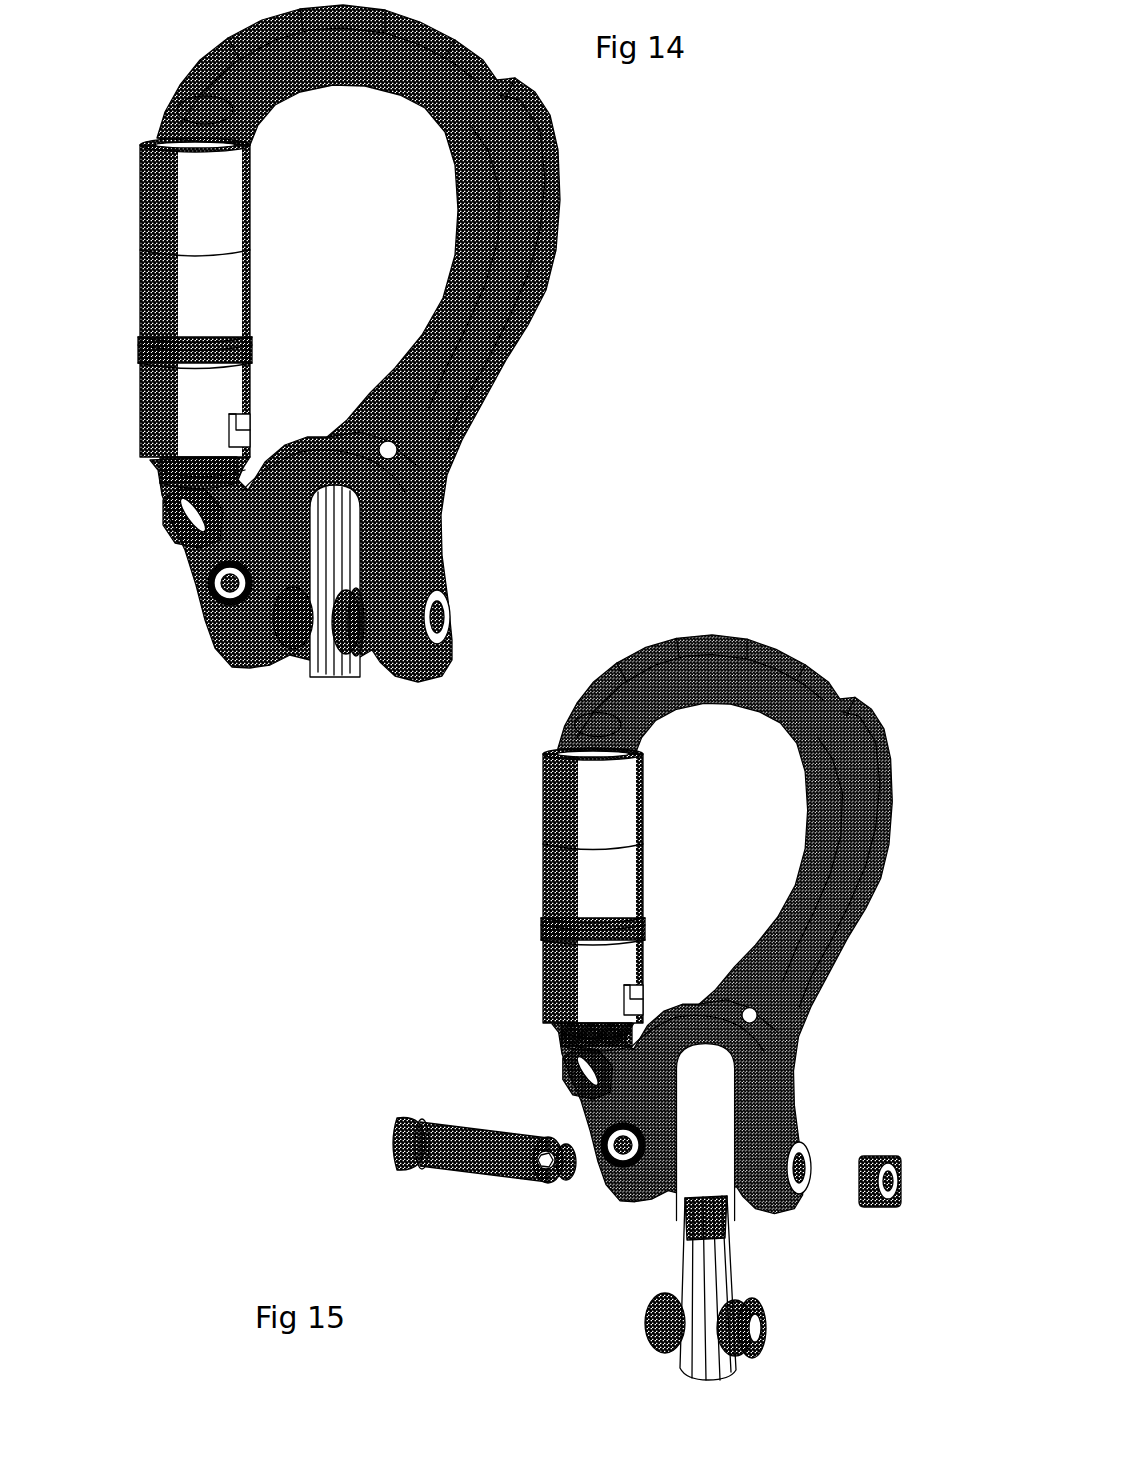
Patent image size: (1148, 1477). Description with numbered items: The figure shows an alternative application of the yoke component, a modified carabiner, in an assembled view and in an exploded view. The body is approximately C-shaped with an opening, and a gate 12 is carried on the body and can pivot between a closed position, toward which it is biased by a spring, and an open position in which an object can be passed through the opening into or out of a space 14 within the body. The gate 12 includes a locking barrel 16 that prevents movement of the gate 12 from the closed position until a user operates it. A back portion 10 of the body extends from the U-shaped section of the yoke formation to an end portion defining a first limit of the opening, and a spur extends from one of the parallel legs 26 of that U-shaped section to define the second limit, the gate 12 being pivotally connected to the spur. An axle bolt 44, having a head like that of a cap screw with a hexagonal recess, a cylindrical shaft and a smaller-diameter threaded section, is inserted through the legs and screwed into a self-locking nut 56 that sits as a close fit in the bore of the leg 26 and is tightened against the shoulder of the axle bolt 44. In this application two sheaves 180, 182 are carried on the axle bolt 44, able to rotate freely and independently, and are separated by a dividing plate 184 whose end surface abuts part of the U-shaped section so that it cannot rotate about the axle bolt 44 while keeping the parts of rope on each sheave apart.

In FIG. 14, the back portion 10 is at (553, 200).
In FIG. 15, the back portion 10 is at (812, 668).
In FIG. 14, the gate 12 is at (153, 262).
In FIG. 15, the gate 12 is at (515, 899).
In FIG. 14, the space 14 is at (346, 239).
In FIG. 15, the space 14 is at (738, 834).
In FIG. 14, the locking barrel 16 is at (137, 267).
In FIG. 15, the locking barrel 16 is at (540, 905).
In FIG. 14, the leg 26 is at (167, 522).
In FIG. 15, the leg 26 is at (604, 1107).
In FIG. 15, the axle bolt 44 is at (467, 1112).
In FIG. 15, the self-locking nut 56 is at (889, 1161).
In FIG. 14, the sheave 180 is at (245, 672).
In FIG. 15, the sheave 180 is at (655, 1322).
In FIG. 14, the sheave 182 is at (352, 655).
In FIG. 15, the sheave 182 is at (765, 1336).
In FIG. 14, the dividing plate 184 is at (320, 678).
In FIG. 15, the dividing plate 184 is at (683, 1241).